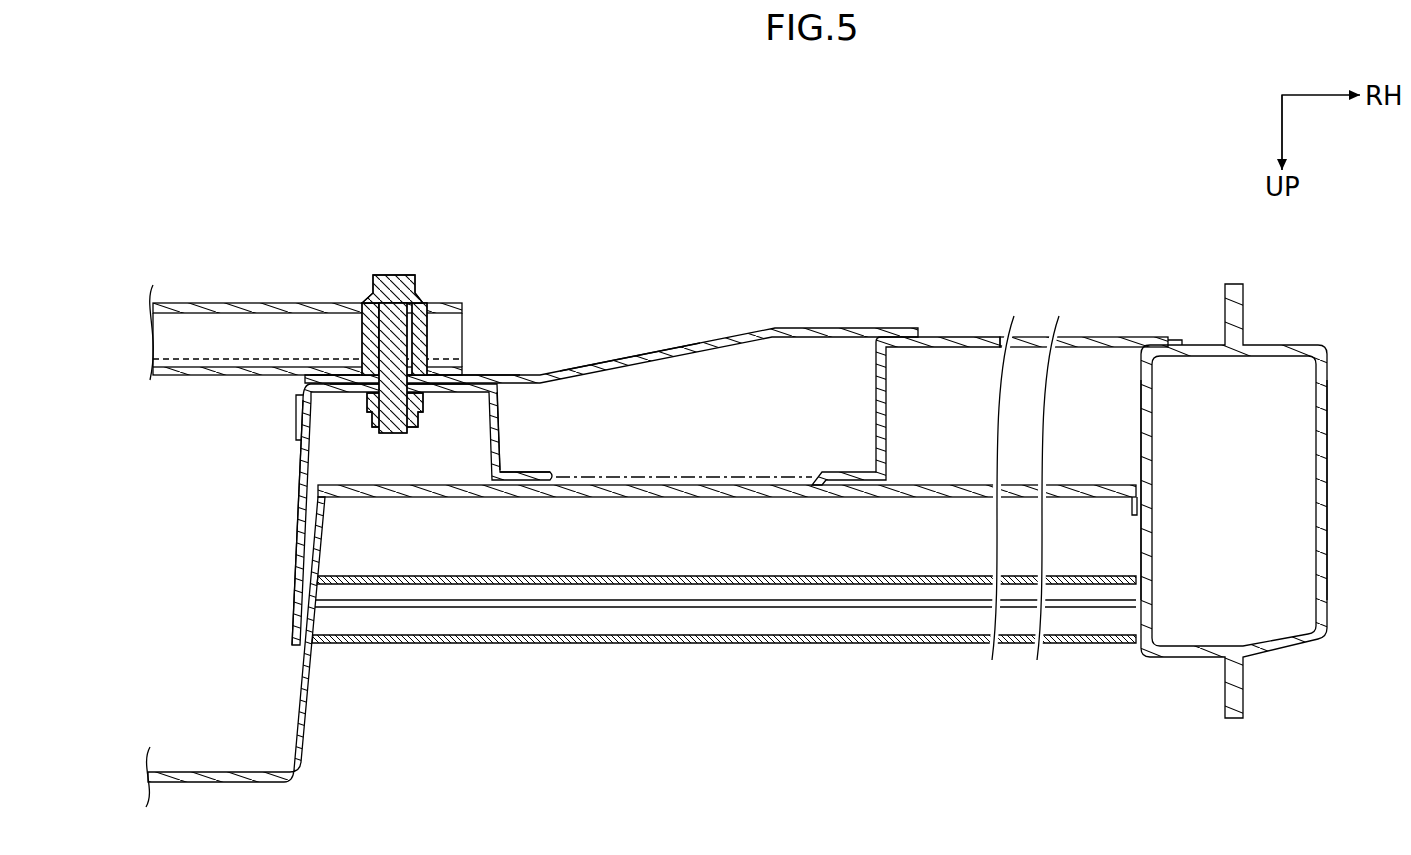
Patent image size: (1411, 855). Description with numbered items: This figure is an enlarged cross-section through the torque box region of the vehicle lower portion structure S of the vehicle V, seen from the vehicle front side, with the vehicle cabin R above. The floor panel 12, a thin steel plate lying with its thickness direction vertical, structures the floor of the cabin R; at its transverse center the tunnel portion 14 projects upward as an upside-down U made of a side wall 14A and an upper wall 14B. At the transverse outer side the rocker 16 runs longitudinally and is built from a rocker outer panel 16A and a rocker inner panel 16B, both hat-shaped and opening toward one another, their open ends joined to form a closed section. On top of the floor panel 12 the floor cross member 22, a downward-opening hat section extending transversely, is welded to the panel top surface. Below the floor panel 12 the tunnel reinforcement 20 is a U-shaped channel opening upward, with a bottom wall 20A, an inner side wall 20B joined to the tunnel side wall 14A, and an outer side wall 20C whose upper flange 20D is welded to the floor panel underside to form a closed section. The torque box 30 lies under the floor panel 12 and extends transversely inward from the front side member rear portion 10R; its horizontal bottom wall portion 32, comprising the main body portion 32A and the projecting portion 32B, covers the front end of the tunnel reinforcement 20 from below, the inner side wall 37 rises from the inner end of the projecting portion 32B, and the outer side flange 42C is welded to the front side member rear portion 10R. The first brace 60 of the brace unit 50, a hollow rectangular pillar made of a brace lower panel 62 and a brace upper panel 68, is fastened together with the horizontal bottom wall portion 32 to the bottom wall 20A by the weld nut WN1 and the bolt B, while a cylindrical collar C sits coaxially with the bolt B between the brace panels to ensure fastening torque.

The front side member rear portion 10R is at (986, 337).
The floor panel 12 is at (713, 500).
The tunnel portion 14 is at (235, 674).
The side wall 14A is at (298, 661).
The upper wall 14B is at (178, 772).
The rocker 16 is at (1302, 660).
The rocker outer panel 16A is at (1329, 470).
The rocker inner panel 16B is at (1153, 550).
The tunnel reinforcement 20 is at (508, 514).
The bottom wall 20A is at (455, 394).
The inner side wall 20B is at (300, 547).
The outer side wall 20C is at (496, 430).
The flange 20D is at (533, 466).
The floor cross member 22 is at (680, 645).
The torque box 30 is at (608, 319).
The horizontal bottom wall portion 32 is at (510, 374).
The main body portion 32A is at (592, 364).
The projecting portion 32B is at (320, 376).
The inner side wall 37 is at (297, 410).
The outer side flange 42C is at (903, 337).
The brace unit 50 is at (306, 341).
The first brace 60 is at (306, 323).
The brace lower panel 62 is at (262, 303).
The brace upper panel 68 is at (180, 376).
The bolt B is at (397, 275).
The collar C is at (428, 332).
The weld nut WN1 is at (372, 432).
The vehicle V is at (301, 166).
The vehicle lower portion structure S is at (704, 230).
The vehicle cabin R is at (796, 783).